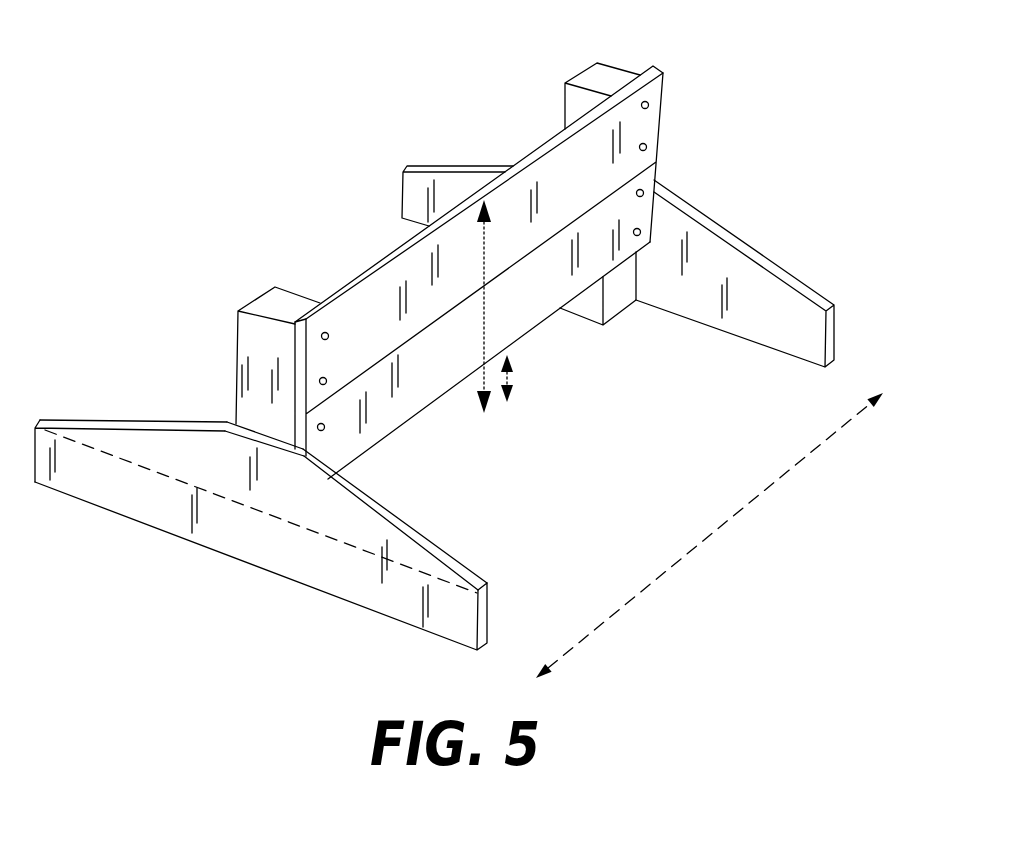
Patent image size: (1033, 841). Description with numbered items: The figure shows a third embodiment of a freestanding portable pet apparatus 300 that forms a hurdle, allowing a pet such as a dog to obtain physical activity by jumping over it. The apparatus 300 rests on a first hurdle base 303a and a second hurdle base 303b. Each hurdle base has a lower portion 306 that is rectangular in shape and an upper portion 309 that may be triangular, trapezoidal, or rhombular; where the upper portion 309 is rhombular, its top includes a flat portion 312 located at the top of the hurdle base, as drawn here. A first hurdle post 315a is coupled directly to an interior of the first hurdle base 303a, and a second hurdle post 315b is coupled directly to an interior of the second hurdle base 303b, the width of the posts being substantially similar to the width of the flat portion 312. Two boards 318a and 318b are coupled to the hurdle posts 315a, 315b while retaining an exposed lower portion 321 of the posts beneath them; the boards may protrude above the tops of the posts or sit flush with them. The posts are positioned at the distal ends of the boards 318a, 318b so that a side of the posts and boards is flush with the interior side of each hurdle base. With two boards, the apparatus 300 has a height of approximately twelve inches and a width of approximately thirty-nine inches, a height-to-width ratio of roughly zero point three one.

The freestanding portable pet apparatus 300 is at (335, 86).
The first hurdle base 303a is at (487, 607).
The second hurdle base 303b is at (835, 332).
The lower portion 306 is at (91, 498).
The upper portion 309 is at (105, 431).
The flat portion 312 is at (224, 416).
The first hurdle post 315a is at (238, 335).
The second hurdle post 315b is at (565, 88).
The board 318a is at (358, 279).
The board 318b is at (413, 418).
The exposed lower portion 321 is at (633, 320).